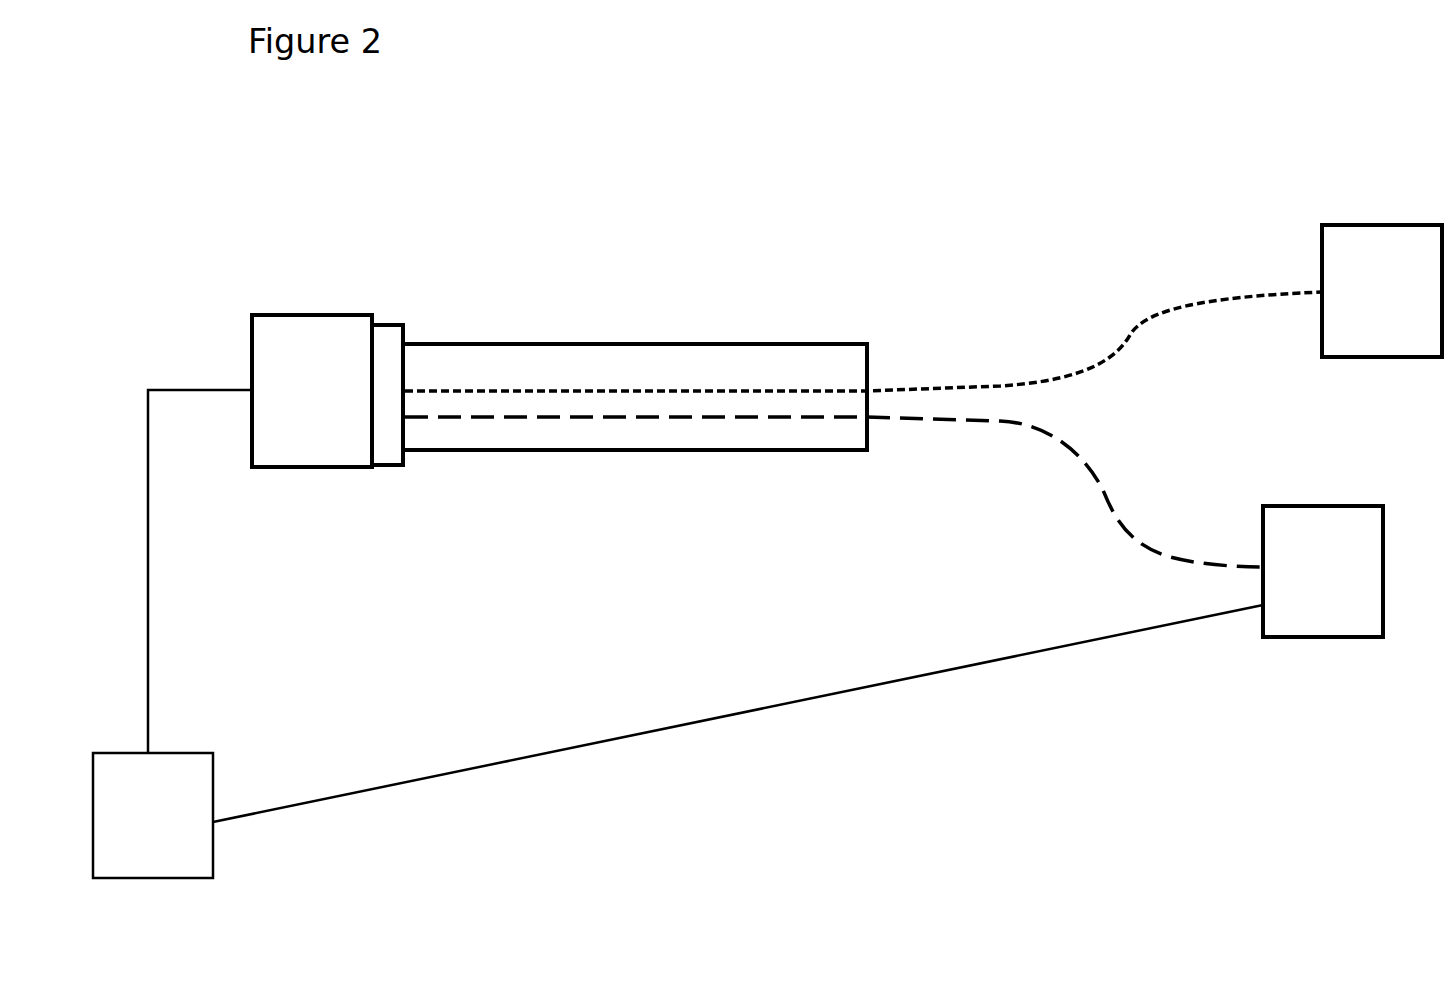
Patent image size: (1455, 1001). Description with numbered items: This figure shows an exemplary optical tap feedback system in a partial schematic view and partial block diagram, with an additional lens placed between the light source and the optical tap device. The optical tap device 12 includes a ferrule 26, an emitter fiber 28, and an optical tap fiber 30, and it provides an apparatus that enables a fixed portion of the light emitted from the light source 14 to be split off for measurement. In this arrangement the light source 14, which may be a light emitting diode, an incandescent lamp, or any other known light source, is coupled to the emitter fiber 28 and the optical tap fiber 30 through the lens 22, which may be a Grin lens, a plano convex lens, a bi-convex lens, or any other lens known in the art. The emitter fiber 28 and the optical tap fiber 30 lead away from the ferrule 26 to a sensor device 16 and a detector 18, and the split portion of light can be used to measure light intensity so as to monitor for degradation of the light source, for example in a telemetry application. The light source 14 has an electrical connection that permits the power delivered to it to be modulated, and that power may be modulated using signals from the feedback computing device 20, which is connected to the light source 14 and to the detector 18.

The optical tap device 12 is at (559, 370).
The light source 14 is at (340, 338).
The sensor device 16 is at (1357, 277).
The detector 18 is at (1292, 607).
The feedback computing device 20 is at (130, 837).
The lens 22 is at (389, 450).
The ferrule 26 is at (772, 363).
The emitter fiber 28 is at (1133, 326).
The optical tap fiber 30 is at (1132, 547).